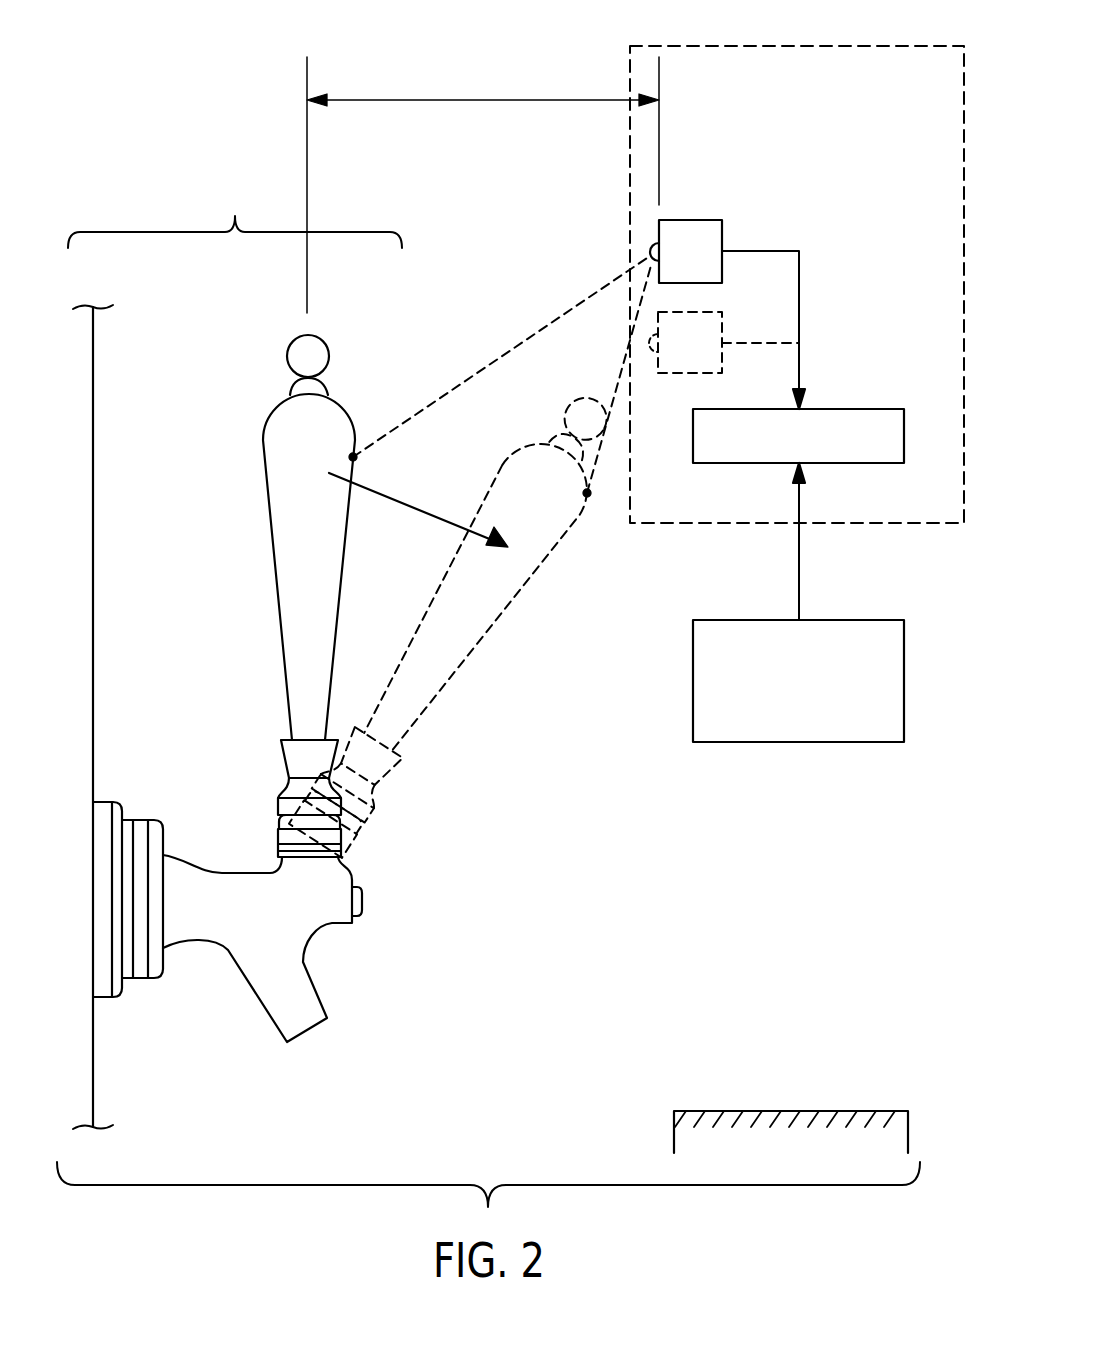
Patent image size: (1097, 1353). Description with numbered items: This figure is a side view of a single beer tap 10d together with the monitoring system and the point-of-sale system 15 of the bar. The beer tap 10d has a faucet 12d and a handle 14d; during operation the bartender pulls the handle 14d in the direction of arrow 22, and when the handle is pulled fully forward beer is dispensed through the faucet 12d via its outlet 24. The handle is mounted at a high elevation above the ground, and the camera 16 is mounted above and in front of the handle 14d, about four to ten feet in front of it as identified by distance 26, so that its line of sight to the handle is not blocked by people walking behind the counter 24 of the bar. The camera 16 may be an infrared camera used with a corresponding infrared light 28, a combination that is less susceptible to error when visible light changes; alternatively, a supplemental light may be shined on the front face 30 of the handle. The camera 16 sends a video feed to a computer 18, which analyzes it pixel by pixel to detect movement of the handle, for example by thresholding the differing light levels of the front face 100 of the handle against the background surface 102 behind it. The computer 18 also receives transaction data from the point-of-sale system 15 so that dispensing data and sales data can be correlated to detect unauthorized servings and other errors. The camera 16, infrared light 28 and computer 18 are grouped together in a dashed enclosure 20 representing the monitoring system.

The beer tap 10d is at (235, 211).
The background surface 102 is at (93, 408).
The handle 14d is at (335, 418).
The front face of the beer tap handle 30 is at (353, 430).
The arrow 22 is at (418, 503).
The front face of the handle 100 is at (346, 518).
The distance 26 is at (510, 100).
The camera 16 is at (690, 220).
The infrared light 28 is at (682, 373).
The computer 18 is at (862, 409).
The sensor unit 20 is at (662, 523).
The point-of-sale system 15 is at (904, 680).
The faucet 12d is at (233, 932).
The outlet 24 is at (790, 1111).